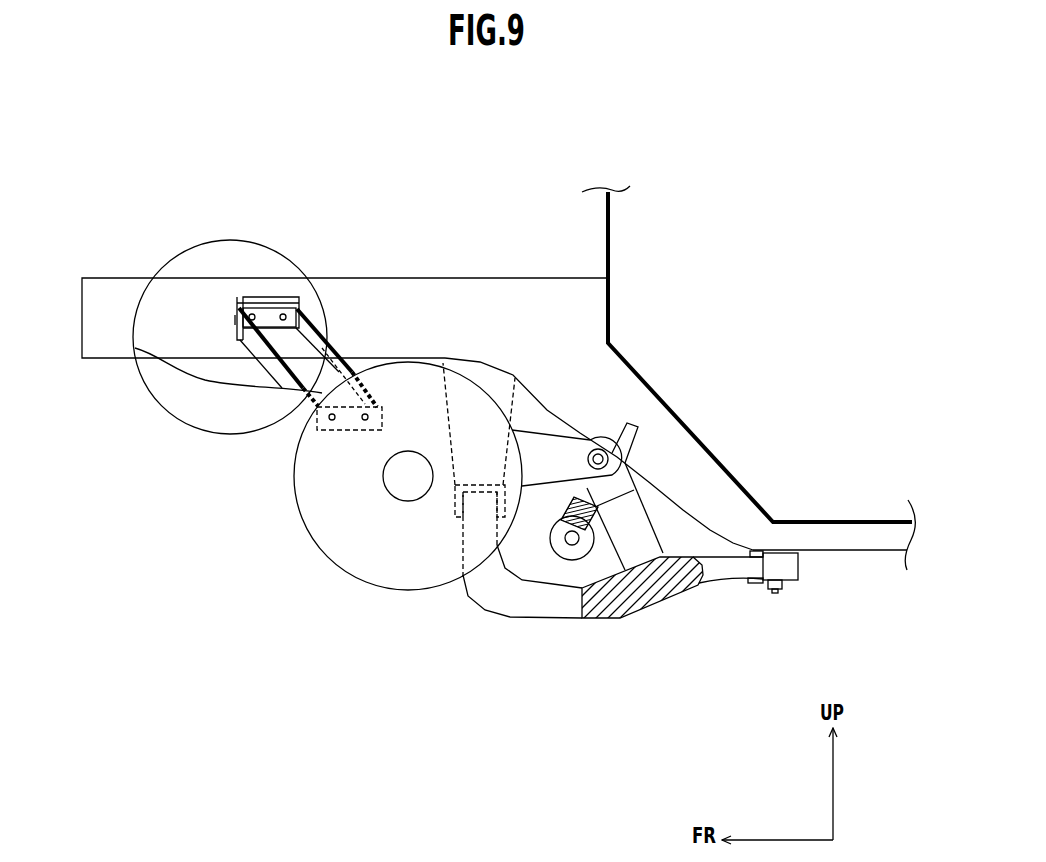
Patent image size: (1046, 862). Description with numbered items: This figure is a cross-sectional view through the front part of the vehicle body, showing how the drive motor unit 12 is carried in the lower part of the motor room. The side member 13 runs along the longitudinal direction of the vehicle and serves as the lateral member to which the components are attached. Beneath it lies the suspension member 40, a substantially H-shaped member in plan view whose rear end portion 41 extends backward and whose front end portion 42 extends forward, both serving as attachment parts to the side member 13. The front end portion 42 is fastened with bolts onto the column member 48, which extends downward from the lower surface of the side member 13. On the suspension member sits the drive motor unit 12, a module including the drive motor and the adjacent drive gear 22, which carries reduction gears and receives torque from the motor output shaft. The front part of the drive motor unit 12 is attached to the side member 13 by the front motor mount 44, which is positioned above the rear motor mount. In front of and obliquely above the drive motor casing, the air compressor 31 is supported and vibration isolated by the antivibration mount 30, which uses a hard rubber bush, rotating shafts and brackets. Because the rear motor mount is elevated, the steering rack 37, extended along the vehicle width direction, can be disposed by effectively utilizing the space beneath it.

The drive motor unit 12 is at (349, 585).
The drive gear 22 is at (408, 476).
The side member 13 is at (390, 276).
The antivibration mount 30 is at (291, 425).
The air compressor 31 is at (207, 438).
The steering rack 37 is at (564, 567).
The suspension member 40 is at (612, 623).
The rear end portion 41 is at (779, 567).
The front end portion 42 is at (470, 519).
The front motor mount 44 is at (236, 304).
The column member 48 is at (498, 380).